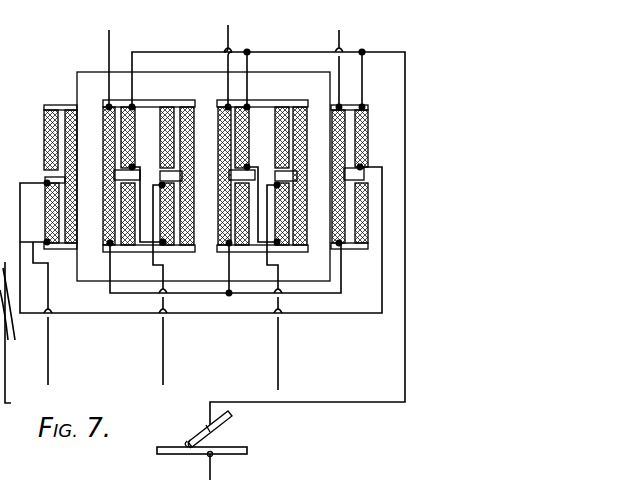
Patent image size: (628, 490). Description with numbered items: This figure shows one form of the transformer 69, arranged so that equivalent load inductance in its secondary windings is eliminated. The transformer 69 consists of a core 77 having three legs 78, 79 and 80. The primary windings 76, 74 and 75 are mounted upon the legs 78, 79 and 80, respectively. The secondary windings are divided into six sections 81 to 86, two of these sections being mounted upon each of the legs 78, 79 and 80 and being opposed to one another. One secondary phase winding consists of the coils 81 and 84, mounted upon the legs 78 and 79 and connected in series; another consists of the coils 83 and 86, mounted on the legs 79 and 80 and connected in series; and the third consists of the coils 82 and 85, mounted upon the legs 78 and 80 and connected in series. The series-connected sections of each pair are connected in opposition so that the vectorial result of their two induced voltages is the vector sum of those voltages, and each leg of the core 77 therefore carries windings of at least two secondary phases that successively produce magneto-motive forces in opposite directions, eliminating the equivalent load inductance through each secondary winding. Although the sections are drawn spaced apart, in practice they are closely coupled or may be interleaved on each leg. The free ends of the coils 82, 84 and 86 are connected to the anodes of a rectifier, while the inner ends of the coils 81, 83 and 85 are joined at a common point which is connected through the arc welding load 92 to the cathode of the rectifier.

The transformer 69 is at (86, 52).
The primary winding 74 is at (193, 101).
The primary winding 75 is at (300, 100).
The primary winding 76 is at (70, 103).
The core 77 is at (88, 72).
The leg 78 is at (90, 127).
The leg 79 is at (203, 119).
The leg 80 is at (317, 120).
The secondary coil section 81 is at (43, 132).
The secondary coil section 82 is at (36, 238).
The secondary coil section 83 is at (160, 133).
The secondary coil section 84 is at (168, 246).
The secondary coil section 85 is at (275, 132).
The secondary coil section 86 is at (279, 246).
The arc welding load 92 is at (235, 425).